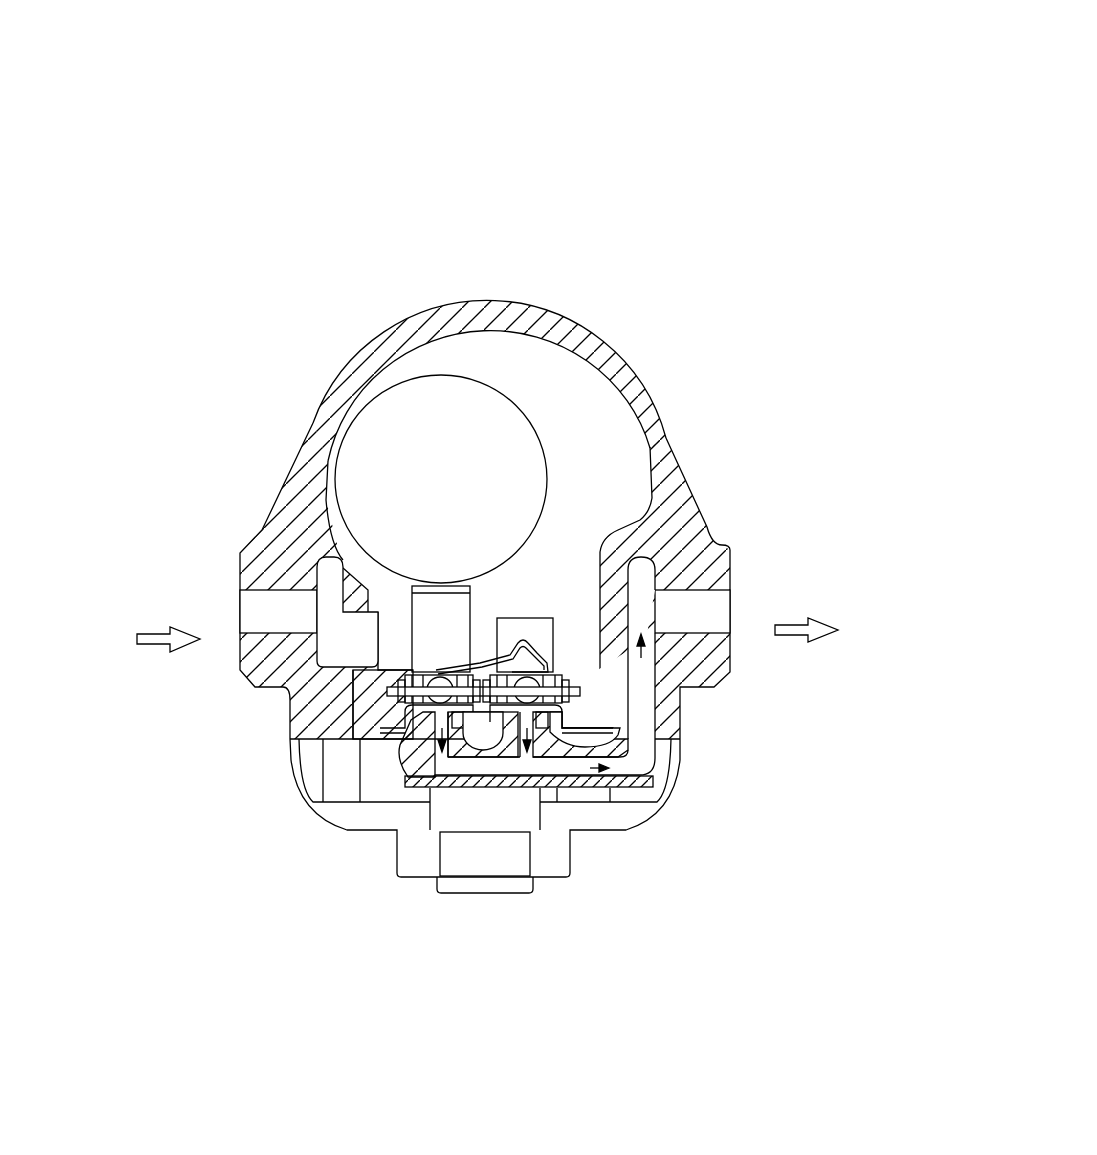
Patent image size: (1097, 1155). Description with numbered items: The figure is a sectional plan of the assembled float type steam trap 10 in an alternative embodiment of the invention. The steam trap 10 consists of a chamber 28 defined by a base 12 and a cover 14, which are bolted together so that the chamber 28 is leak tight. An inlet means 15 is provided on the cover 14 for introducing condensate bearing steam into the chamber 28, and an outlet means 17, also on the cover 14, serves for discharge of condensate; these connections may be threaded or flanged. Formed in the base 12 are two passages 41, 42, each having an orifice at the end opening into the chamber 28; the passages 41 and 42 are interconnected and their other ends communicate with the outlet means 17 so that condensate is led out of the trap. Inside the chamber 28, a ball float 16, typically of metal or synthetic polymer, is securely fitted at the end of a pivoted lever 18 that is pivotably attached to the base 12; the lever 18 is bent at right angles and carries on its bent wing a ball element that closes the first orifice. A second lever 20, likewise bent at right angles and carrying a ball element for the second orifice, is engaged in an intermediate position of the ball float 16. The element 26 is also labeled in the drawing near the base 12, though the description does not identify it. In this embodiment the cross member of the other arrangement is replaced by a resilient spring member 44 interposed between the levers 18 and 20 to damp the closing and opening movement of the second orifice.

The steam trap 10 is at (560, 222).
The base 12 is at (303, 813).
The cover 14 is at (607, 357).
The inlet means 15 is at (262, 613).
The ball float 16 is at (390, 423).
The outlet means 17 is at (697, 612).
The lever 18 is at (415, 633).
The second lever 20 is at (537, 630).
The valve seat insert 26 is at (378, 690).
The chamber 28 is at (593, 437).
The passage 41 is at (413, 783).
The passage 42 is at (524, 750).
The resilient spring member 44 is at (477, 655).